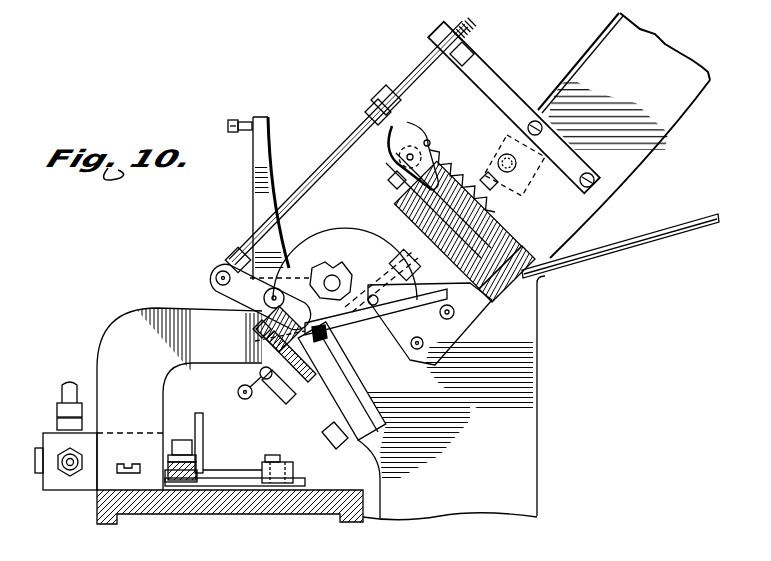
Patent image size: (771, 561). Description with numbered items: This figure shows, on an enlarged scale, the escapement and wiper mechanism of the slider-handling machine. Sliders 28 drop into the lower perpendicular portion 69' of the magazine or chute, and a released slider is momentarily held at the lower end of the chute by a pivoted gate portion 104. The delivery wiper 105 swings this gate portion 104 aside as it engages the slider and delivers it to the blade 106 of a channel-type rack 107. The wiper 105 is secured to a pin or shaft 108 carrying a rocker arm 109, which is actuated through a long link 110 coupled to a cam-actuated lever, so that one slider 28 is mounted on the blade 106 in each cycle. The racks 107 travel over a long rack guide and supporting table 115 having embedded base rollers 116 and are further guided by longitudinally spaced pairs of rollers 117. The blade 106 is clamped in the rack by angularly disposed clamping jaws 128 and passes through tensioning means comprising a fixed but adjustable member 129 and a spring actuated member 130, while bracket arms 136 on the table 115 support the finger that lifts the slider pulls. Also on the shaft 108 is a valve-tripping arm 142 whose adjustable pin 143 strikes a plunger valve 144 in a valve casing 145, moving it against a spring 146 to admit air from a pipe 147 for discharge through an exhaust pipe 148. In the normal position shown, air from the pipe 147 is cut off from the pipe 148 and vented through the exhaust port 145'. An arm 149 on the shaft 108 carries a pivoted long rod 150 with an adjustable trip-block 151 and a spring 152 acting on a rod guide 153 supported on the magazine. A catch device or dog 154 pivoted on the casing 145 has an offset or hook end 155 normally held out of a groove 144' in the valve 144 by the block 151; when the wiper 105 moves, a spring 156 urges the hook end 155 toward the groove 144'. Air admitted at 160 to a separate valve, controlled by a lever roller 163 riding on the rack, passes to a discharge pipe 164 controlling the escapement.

The slider 28 is at (332, 373).
The lower perpendicular portion of the magazine or chute 69' is at (624, 135).
The pivoted gate portion 104 is at (327, 339).
The delivery wiper 105 is at (318, 267).
The blade 106 is at (285, 401).
The channel-type rack 107 is at (203, 450).
The pin or shaft 108 is at (264, 290).
The rocker arm 109 is at (338, 293).
The long link 110 is at (458, 329).
The rack guide and supporting table 115 is at (168, 492).
The base rollers 116 is at (240, 488).
The pairs of rollers 117 is at (172, 480).
The clamping jaws 128 is at (245, 386).
The fixed adjustable member 129 is at (320, 405).
The spring actuated member 130 is at (258, 338).
The bracket arms 136 is at (127, 322).
The valve-tripping or actuating arm 142 is at (252, 201).
The adjustable pin 143 is at (268, 118).
The plunger valve 144 is at (469, 221).
The groove 144' is at (375, 175).
The valve casing 145 is at (620, 243).
The exhaust port 145' is at (380, 273).
The spring 146 is at (493, 293).
The pipe 147 is at (486, 172).
The exhaust pipe 148 is at (424, 350).
The arm 149 is at (235, 301).
The long rod 150 is at (304, 197).
The adjustable trip-block 151 is at (392, 88).
The spring 152 is at (480, 24).
The rod guide 153 is at (497, 78).
The catch device or dog 154 is at (407, 145).
The offset or hook end 155 is at (453, 163).
The spring 156 is at (503, 198).
The air admission 160 is at (68, 478).
The roller 163 is at (181, 440).
The discharge pipe 164 is at (63, 394).